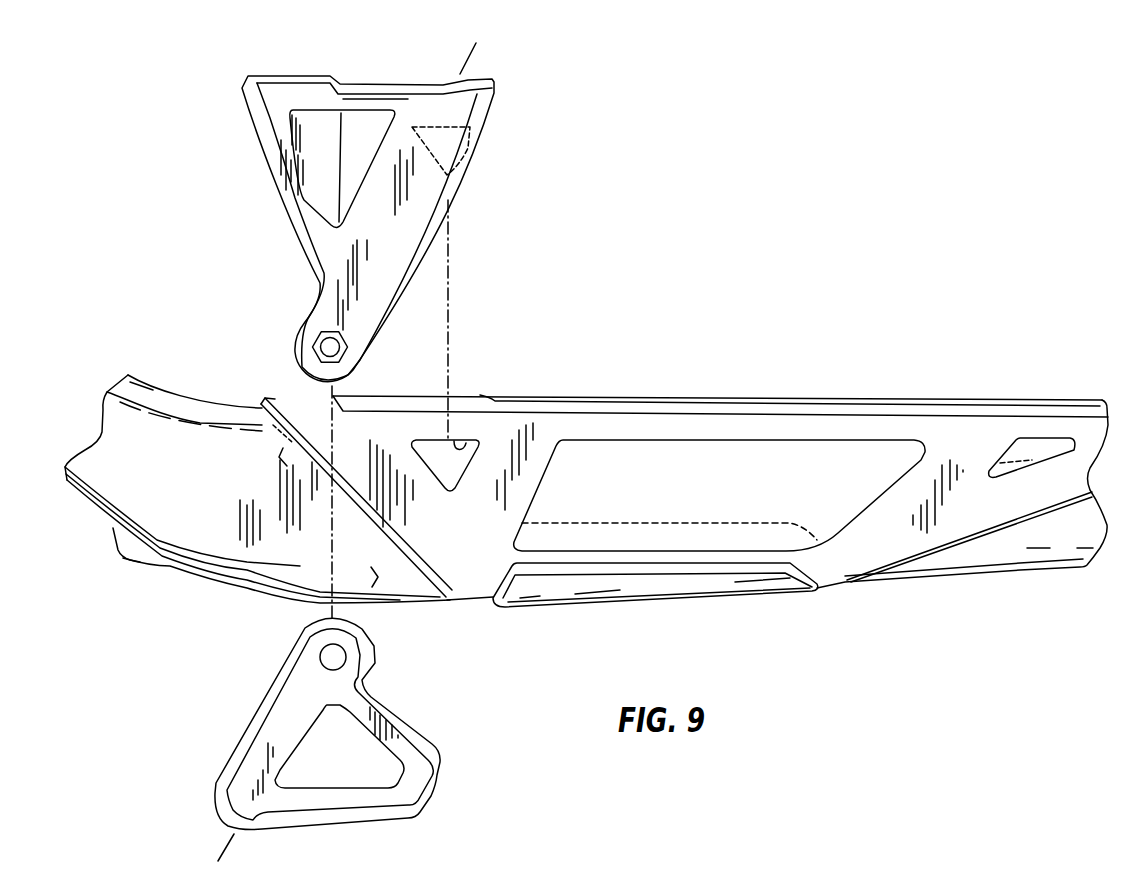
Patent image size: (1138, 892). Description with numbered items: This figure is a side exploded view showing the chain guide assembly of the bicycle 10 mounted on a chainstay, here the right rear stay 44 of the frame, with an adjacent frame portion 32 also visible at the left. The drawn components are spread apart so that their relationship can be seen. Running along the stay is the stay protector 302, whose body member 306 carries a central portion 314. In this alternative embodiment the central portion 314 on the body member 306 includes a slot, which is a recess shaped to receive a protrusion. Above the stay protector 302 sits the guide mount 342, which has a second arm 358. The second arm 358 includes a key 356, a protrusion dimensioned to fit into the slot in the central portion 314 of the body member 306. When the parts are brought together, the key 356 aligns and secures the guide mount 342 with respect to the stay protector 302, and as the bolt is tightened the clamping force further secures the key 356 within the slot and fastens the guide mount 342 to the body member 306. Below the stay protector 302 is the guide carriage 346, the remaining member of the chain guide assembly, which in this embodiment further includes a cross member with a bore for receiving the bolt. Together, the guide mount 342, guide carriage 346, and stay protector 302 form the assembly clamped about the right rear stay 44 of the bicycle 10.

The bicycle 10 is at (458, 54).
The frame rail 32 is at (118, 556).
The right rear stay 44 is at (187, 505).
The stay protector 302 is at (585, 481).
The body member 306 is at (466, 616).
The central portion 314 is at (645, 427).
The guide mount 342 is at (347, 229).
The guide carriage 346 is at (476, 442).
The key 356 is at (416, 135).
The second arm 358 is at (355, 310).